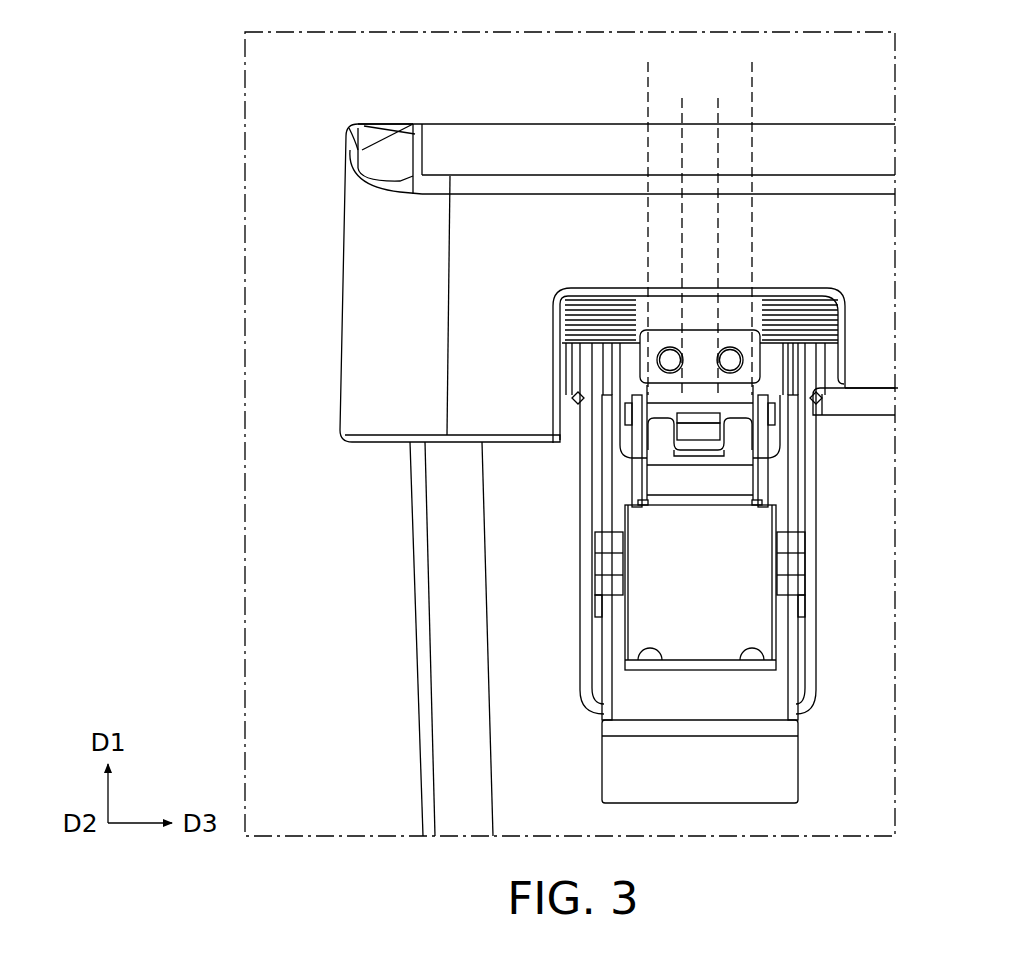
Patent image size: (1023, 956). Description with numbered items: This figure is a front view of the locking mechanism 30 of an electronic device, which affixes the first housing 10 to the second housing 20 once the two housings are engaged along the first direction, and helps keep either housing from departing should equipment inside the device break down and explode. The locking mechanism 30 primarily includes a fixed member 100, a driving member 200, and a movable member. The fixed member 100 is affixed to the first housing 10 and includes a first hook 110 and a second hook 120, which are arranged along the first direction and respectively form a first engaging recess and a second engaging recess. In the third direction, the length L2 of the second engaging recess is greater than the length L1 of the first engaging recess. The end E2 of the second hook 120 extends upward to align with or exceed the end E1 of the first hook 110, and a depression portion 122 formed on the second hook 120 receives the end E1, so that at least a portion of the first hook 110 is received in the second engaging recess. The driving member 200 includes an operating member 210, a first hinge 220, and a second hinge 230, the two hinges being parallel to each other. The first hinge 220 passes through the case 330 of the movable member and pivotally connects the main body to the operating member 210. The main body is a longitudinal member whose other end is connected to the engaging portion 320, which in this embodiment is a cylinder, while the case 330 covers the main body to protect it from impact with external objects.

The first housing 10 is at (876, 253).
The second housing 20 is at (447, 520).
The locking mechanism 30 is at (838, 714).
The fixed member 100 is at (755, 360).
The first hook 110 is at (713, 432).
The second hook 120 is at (740, 445).
The depression portion 122 is at (690, 445).
The driving member 200 is at (533, 599).
The operating member 210 is at (640, 700).
The first hinge 220 is at (598, 607).
The second hinge 230 is at (598, 563).
The engaging portion 320 is at (753, 407).
The case 330 is at (752, 573).
The end of the first hook E1 is at (690, 420).
The end of the second hook E2 is at (660, 417).
The length of the first engaging recess L1 is at (640, 112).
The length of the second engaging recess L2 is at (648, 75).